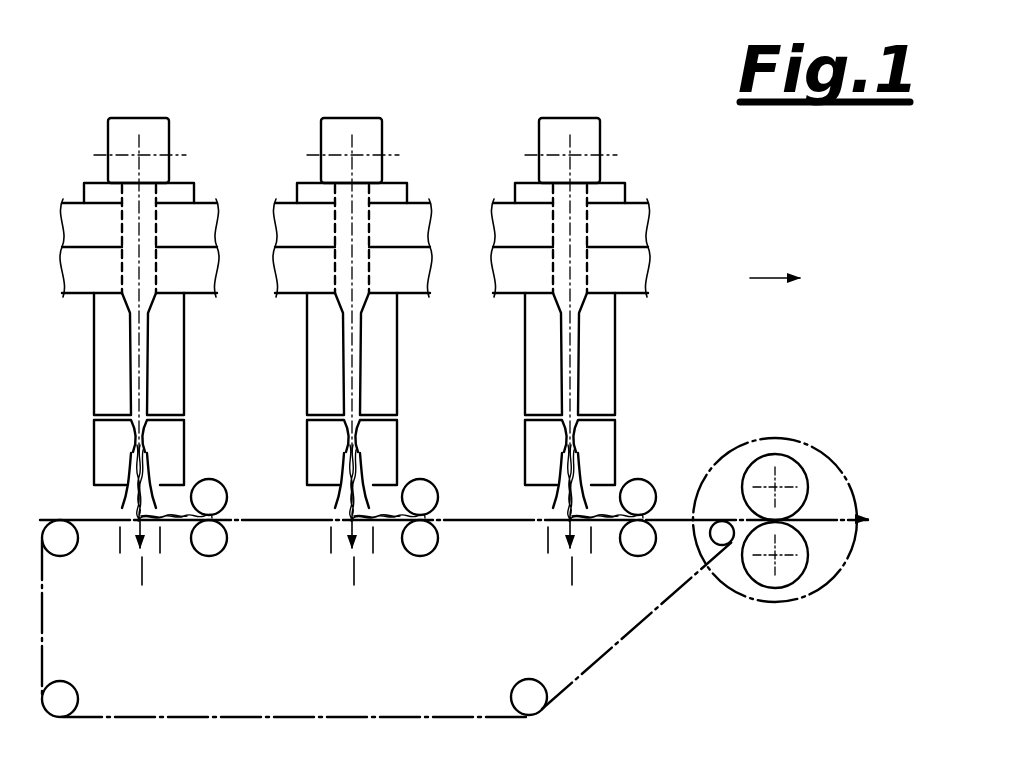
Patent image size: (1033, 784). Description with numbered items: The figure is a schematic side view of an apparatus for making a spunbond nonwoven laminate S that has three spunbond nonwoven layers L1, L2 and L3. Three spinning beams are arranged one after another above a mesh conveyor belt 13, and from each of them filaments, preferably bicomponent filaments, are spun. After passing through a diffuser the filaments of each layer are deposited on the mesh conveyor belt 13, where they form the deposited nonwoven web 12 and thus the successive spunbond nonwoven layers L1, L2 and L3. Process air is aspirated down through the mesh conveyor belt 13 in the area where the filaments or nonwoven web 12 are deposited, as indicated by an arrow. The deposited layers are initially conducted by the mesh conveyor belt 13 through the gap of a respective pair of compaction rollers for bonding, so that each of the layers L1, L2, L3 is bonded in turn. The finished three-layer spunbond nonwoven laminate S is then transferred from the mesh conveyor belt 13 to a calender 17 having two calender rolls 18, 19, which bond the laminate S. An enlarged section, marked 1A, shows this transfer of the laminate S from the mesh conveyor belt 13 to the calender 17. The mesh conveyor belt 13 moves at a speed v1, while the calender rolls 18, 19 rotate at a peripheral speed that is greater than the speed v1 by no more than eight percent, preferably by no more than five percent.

The first spunbond nonwoven layer L1 is at (180, 505).
The second spunbond nonwoven layer L2 is at (392, 500).
The third spunbond nonwoven layer L3 is at (607, 498).
The mesh conveyor belt 13 is at (298, 522).
The nonwoven web 12 is at (454, 433).
The spunbond nonwoven laminate S is at (719, 506).
The calender 17 is at (812, 504).
The calender roll 18 is at (785, 468).
The calender roll 19 is at (788, 578).
The calender detail region 1A is at (772, 603).
The speed of the mesh conveyor belt v1 is at (770, 278).